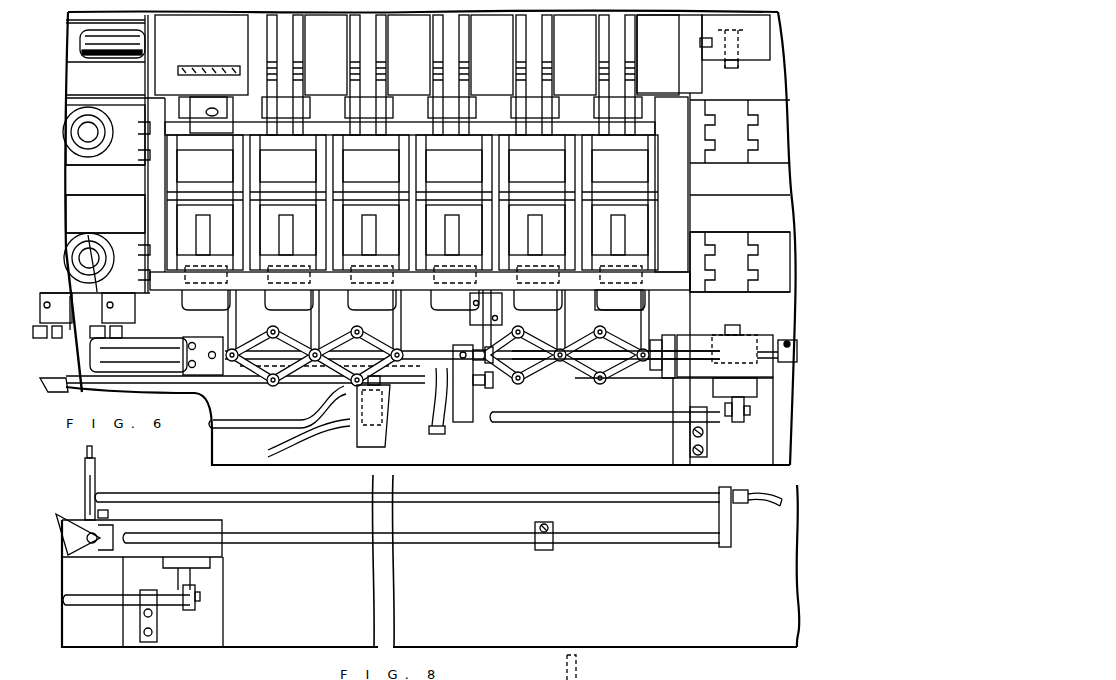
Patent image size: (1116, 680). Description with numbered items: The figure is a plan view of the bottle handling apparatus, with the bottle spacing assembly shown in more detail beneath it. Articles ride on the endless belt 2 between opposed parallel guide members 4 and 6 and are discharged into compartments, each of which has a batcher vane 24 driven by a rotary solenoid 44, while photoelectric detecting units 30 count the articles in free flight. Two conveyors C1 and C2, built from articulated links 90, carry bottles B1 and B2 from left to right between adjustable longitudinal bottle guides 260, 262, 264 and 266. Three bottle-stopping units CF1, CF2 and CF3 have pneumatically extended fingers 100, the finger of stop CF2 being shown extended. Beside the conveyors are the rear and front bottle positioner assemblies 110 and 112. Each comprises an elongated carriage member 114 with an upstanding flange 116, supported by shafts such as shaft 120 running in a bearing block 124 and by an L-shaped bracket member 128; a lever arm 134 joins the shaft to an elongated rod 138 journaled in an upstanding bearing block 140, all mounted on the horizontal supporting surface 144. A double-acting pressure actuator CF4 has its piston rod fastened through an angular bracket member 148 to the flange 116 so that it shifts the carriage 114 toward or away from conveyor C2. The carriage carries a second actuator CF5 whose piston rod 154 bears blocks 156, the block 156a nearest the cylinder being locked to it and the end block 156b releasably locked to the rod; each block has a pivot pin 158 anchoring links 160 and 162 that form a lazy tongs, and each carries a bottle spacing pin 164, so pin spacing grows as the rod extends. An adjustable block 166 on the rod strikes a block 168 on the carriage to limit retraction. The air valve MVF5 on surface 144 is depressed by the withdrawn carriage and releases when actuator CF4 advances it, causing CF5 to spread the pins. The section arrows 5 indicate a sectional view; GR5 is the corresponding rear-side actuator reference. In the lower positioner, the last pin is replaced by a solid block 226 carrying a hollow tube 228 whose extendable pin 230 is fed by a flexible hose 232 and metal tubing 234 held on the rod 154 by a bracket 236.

In FIG. 6, the endless belt 2 is at (206, 74).
In FIG. 6, the guide member 4 is at (282, 52).
In FIG. 6, the guide member 6 is at (308, 60).
In FIG. 6, the batcher vane 24 is at (614, 226).
In FIG. 6, the photoelectric detecting unit 30 is at (192, 150).
In FIG. 6, the rotary solenoid 44 is at (618, 302).
In FIG. 6, the link 90 is at (726, 200).
In FIG. 6, the finger 100 is at (66, 265).
In FIG. 6, the rear bottle positioner assembly 110 is at (756, 48).
In FIG. 6, the front bottle positioner assembly 112 is at (215, 388).
In FIG. 6, the elongated member 114 is at (706, 345).
In FIG. 6, the upstanding flange 116 is at (566, 380).
In FIG. 6, the shaft 120 is at (742, 324).
In FIG. 6, the bearing block 124 is at (755, 382).
In FIG. 6, the L-shaped bracket member 128 is at (752, 398).
In FIG. 6, the lever arm 134 is at (748, 398).
In FIG. 6, the elongated rod 138 is at (612, 424).
In FIG. 6, the bearing block 140 is at (708, 438).
In FIG. 8, the bearing block 140 is at (158, 628).
In FIG. 6, the horizontal supporting surface 144 is at (560, 456).
In FIG. 6, the angular bracket member 148 is at (357, 432).
In FIG. 6, the piston rod 154 is at (680, 354).
In FIG. 8, the piston rod 154 is at (568, 545).
In FIG. 6, the block 156 is at (316, 346).
In FIG. 6, the block 156a is at (238, 348).
In FIG. 6, the end block 156b is at (642, 382).
In FIG. 6, the pivot pin 158 is at (266, 334).
In FIG. 6, the link 160 is at (287, 332).
In FIG. 6, the link 162 is at (276, 386).
In FIG. 6, the bottle spacing pin 164 is at (386, 331).
In FIG. 6, the adjustable block 166 is at (785, 341).
In FIG. 8, the adjustable block 166 is at (545, 553).
In FIG. 6, the block 168 is at (676, 382).
In FIG. 8, the solid block 226 is at (96, 512).
In FIG. 8, the hollow tube 228 is at (96, 472).
In FIG. 8, the extendable pin 230 is at (88, 446).
In FIG. 8, the flexible hose 232 is at (766, 506).
In FIG. 8, the metal tubing 234 is at (592, 499).
In FIG. 8, the bracket 236 is at (728, 549).
In FIG. 6, the bottle guide 260 is at (76, 176).
In FIG. 6, the bottle guide 262 is at (740, 88).
In FIG. 6, the bottle guide 264 is at (86, 206).
In FIG. 6, the bottle guide 266 is at (740, 300).
In FIG. 6, the section arrow 5 is at (475, 107).
In FIG. 6, the bottle B1 is at (76, 122).
In FIG. 6, the bottle B2 is at (78, 247).
In FIG. 6, the conveyor C1 is at (808, 123).
In FIG. 6, the conveyor C2 is at (808, 207).
In FIG. 6, the bottle-stopping unit CF1 is at (52, 350).
In FIG. 6, the bottle-stopping unit CF2 is at (130, 305).
In FIG. 6, the bottle-stopping unit CF3 is at (500, 305).
In FIG. 6, the pressure actuator CF4 is at (384, 420).
In FIG. 6, the fluid pressure actuator CF5 is at (130, 338).
In FIG. 6, the roller GR5 is at (97, 58).
In FIG. 6, the mechanically operated air valve MVF5 is at (476, 412).